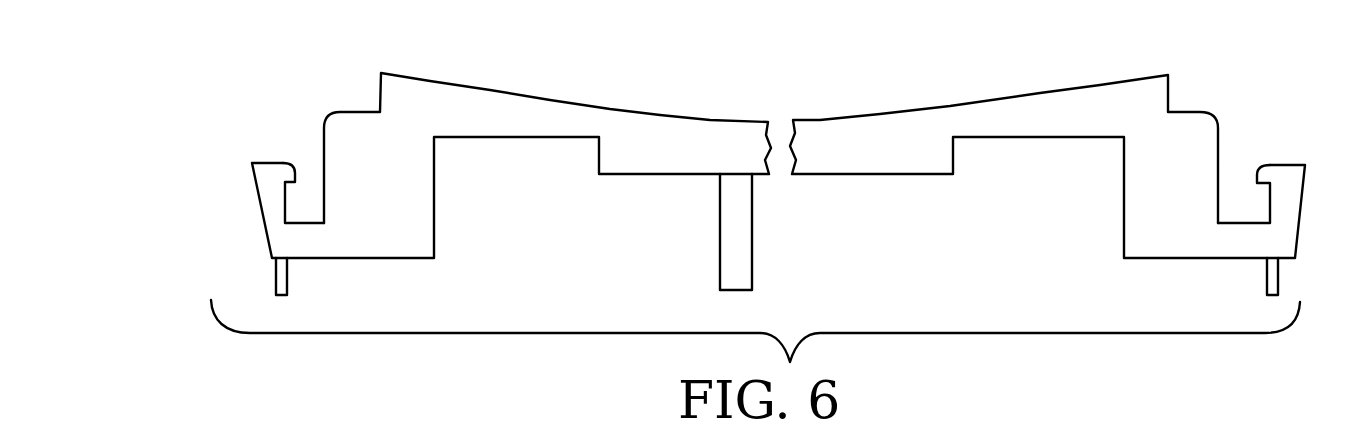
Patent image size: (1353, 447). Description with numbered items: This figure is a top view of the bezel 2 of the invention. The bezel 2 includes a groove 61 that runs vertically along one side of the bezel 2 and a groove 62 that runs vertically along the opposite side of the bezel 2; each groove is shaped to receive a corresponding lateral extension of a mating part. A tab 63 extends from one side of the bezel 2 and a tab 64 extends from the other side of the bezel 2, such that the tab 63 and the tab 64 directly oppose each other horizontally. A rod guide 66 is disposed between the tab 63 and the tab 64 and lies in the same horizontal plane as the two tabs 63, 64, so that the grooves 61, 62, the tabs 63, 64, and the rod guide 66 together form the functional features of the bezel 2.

The bezel 2 is at (626, 93).
The groove 61 is at (1247, 207).
The groove 62 is at (307, 213).
The tab 63 is at (1267, 280).
The tab 64 is at (288, 277).
The rod guide 66 is at (720, 257).